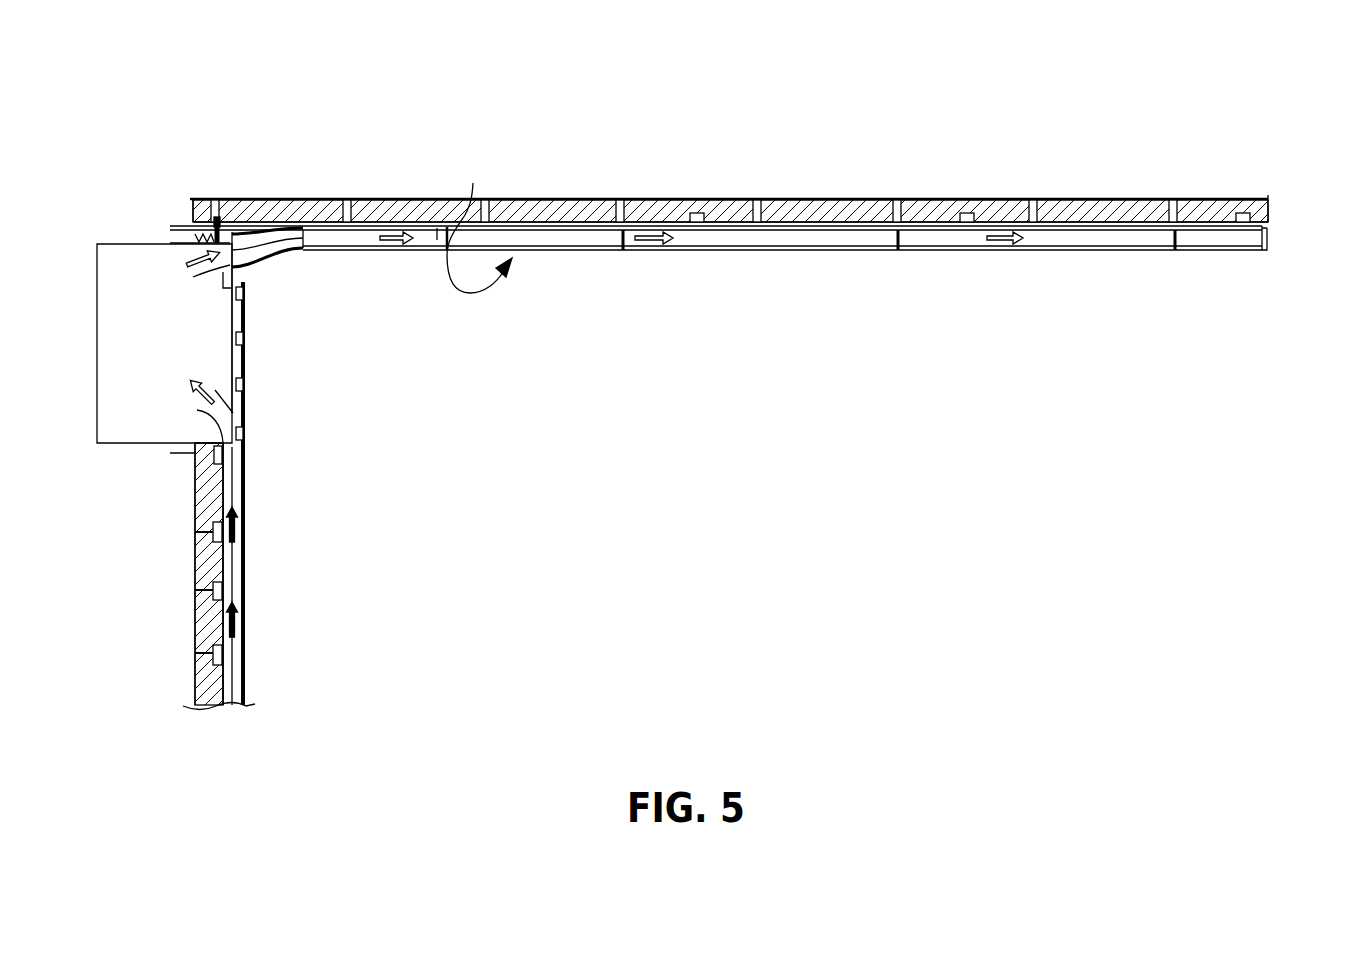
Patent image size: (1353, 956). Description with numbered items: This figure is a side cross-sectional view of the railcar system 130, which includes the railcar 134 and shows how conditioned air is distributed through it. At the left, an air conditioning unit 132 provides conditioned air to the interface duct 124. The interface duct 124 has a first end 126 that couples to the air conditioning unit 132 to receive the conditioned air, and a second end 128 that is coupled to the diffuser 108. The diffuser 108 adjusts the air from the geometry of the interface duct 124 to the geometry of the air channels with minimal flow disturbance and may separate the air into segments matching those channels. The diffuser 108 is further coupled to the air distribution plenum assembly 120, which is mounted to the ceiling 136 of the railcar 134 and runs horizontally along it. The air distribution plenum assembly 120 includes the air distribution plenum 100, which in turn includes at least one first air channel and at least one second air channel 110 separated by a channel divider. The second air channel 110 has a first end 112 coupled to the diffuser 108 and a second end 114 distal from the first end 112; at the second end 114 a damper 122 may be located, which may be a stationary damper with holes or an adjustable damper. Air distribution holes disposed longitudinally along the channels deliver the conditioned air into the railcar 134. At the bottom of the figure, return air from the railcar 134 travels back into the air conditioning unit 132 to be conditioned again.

The air distribution plenum 100 is at (828, 208).
The diffuser 108 is at (437, 230).
The second air channel 110 is at (605, 237).
The first end of the second air channel 112 is at (535, 214).
The second end of the second air channel 114 is at (1224, 218).
The air distribution plenum assembly 120 is at (479, 221).
The damper 122 is at (1267, 237).
The interface duct 124 is at (277, 230).
The first end of the interface duct 126 is at (252, 233).
The second end of the interface duct 128 is at (320, 220).
The railcar system 130 is at (1210, 80).
The air conditioning unit 132 is at (120, 258).
The railcar 134 is at (193, 614).
The ceiling 136 is at (787, 212).